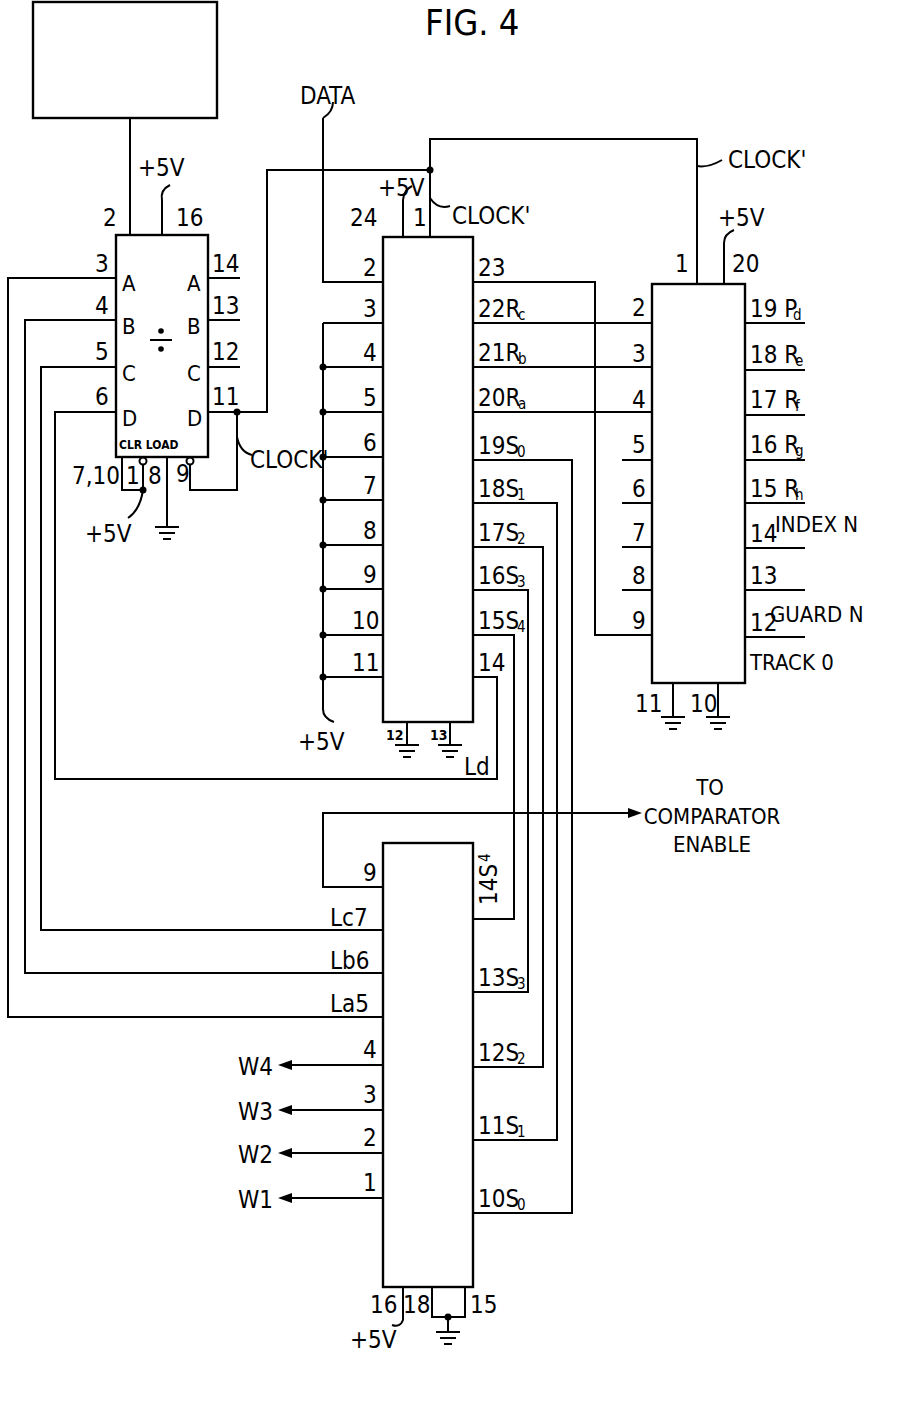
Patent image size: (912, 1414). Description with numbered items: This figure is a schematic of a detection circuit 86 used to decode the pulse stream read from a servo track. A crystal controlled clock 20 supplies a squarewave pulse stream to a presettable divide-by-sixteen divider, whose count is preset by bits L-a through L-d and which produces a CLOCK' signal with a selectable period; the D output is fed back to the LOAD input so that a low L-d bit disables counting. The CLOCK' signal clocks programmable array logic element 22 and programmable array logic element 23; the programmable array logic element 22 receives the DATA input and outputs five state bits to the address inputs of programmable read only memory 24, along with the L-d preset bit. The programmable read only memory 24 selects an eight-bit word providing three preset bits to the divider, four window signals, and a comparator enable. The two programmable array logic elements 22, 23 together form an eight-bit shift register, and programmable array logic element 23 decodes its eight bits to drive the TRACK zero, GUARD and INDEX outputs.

The clock 20 is at (217, 60).
The programmable array logic element 22 is at (428, 479).
The programmable array logic element 23 is at (698, 483).
The programmable read only memory 24 is at (428, 1065).
The detection circuit 86 is at (628, 97).